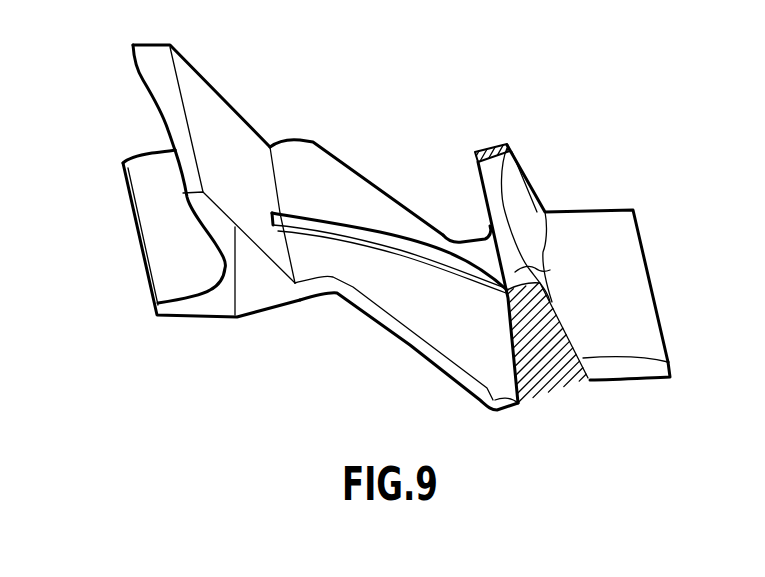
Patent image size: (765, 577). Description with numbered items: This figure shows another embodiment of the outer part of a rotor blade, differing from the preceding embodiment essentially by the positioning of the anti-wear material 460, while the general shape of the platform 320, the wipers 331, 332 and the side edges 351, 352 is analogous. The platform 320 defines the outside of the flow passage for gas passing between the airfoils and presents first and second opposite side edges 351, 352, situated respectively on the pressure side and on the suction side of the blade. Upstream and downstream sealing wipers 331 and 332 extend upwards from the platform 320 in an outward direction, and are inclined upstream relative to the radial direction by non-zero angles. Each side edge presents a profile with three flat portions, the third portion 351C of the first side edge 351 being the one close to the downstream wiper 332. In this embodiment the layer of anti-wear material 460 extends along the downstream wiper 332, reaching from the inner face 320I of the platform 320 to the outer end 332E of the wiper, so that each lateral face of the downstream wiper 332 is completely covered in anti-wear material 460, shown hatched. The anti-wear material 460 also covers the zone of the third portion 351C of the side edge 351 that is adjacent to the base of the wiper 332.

The platform 320 is at (353, 203).
The inner face of the platform 320I is at (527, 410).
The upstream sealing wiper 331 is at (213, 113).
The downstream sealing wiper 332 is at (518, 222).
The outer end of the wiper 332E is at (550, 270).
The first side edge 351 is at (411, 344).
The third portion of the first side edge 351C is at (568, 385).
The second side edge 352 is at (312, 140).
The anti-wear material 460 is at (475, 147).